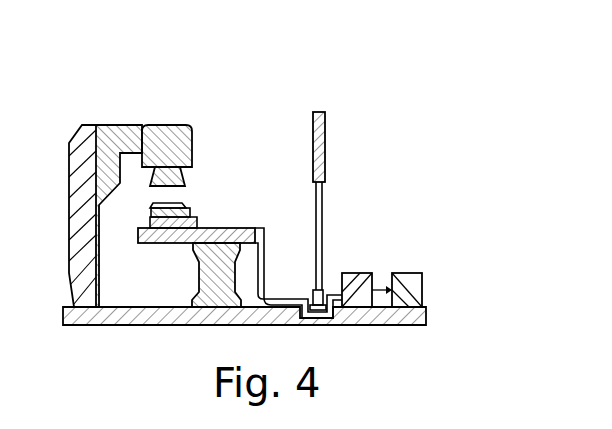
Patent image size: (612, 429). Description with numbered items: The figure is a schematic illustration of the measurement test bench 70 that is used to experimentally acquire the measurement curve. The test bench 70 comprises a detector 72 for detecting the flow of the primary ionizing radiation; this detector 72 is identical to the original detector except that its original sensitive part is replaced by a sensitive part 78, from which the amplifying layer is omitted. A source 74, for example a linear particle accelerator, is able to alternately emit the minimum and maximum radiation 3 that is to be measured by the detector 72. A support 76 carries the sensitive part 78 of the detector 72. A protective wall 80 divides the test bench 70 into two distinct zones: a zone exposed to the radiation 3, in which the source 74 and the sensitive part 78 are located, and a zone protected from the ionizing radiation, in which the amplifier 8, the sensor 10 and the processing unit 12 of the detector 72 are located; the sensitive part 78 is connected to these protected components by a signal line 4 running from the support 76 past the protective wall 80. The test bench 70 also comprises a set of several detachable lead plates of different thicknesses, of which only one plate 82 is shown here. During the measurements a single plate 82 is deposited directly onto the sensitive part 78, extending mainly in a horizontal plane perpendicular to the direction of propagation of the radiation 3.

The measurement test bench 70 is at (425, 95).
The source 74 is at (193, 138).
The radiation 3min and 3max 3 is at (184, 177).
The plate 82 is at (186, 205).
The sensitive part 78 is at (150, 217).
The support 76 is at (137, 235).
The signal line 4 is at (264, 263).
The protective wall 80 is at (322, 198).
The detector 72 is at (452, 207).
The amplifier 8 is at (379, 257).
The sensor 10 is at (362, 270).
The processing unit 12 is at (410, 270).